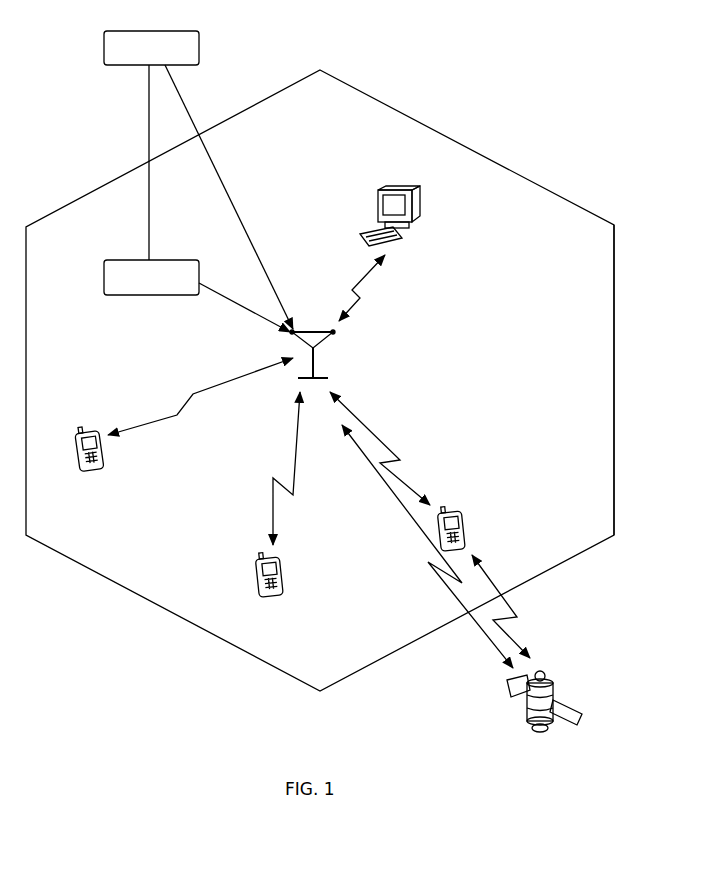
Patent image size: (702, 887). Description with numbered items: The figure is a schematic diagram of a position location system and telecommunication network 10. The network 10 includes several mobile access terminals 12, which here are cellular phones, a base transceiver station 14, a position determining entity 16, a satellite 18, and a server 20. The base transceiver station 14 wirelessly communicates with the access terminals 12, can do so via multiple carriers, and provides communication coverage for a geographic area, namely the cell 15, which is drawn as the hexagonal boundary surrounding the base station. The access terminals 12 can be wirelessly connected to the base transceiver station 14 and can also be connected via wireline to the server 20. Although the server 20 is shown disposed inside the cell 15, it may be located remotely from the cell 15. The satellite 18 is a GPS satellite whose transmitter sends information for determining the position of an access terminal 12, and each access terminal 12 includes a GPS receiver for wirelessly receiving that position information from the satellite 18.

The position location system and telecommunication network 10 is at (593, 126).
The mobile access terminal 12 is at (383, 192).
The base transceiver station 14 is at (308, 327).
The cell 15 is at (614, 370).
The position determining entity 16 is at (164, 31).
The satellite 18 is at (553, 688).
The server 20 is at (143, 296).